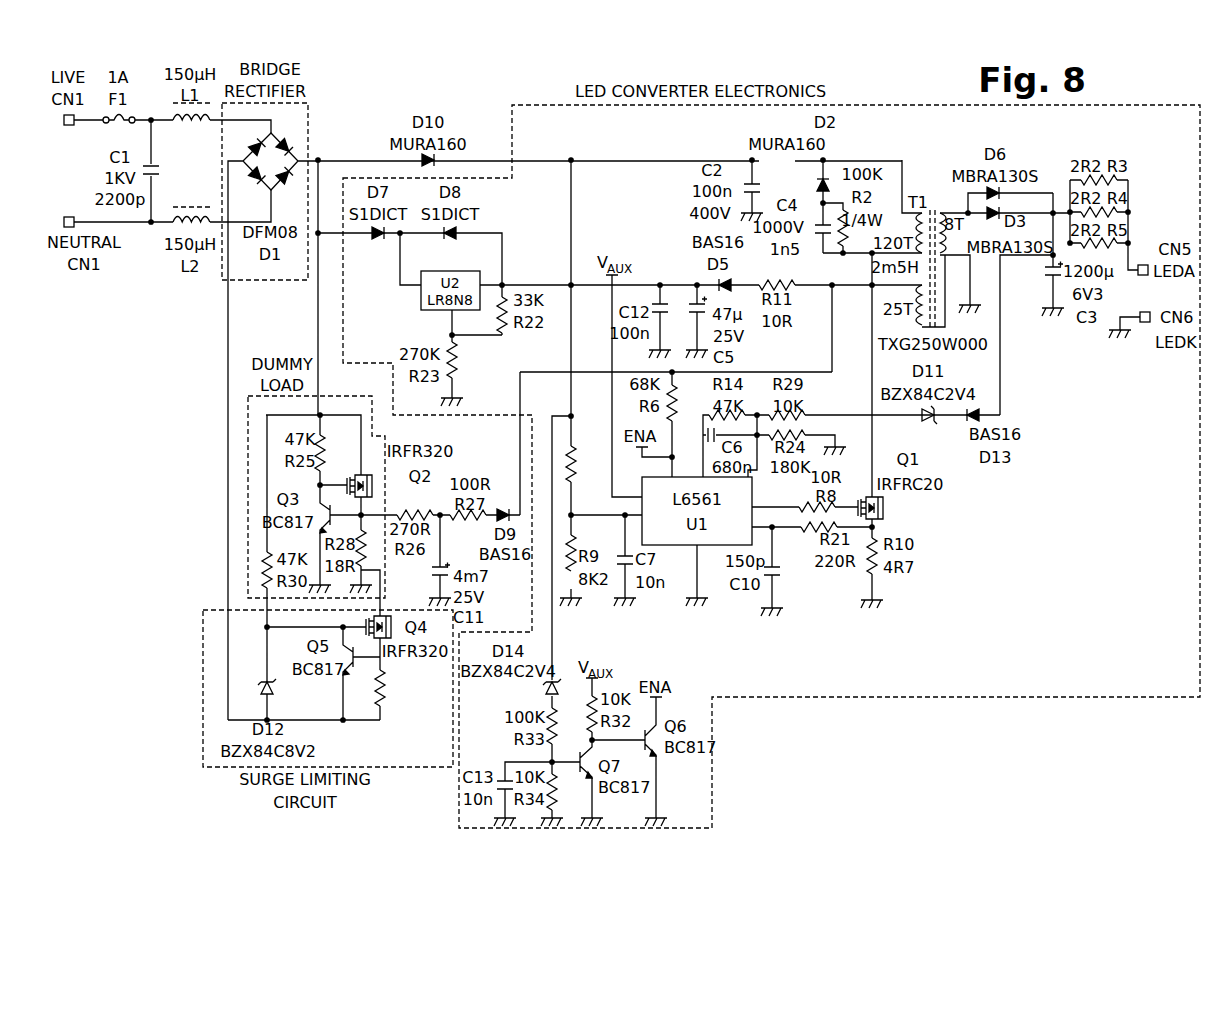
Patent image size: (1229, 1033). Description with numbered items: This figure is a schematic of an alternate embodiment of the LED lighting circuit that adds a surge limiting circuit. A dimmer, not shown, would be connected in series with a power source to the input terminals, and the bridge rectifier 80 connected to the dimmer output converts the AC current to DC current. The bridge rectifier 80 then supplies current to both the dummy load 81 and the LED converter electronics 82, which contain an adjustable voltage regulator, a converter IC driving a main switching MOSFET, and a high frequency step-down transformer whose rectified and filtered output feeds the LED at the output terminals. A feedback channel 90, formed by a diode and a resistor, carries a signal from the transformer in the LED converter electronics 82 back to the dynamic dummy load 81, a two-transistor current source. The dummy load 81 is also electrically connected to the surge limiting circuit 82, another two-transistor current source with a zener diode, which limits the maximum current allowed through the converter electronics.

The bridge rectifier 80 is at (312, 110).
The LED converter electronics 82 is at (527, 105).
The dummy load 81 is at (248, 415).
The feedback channel 90 is at (520, 430).